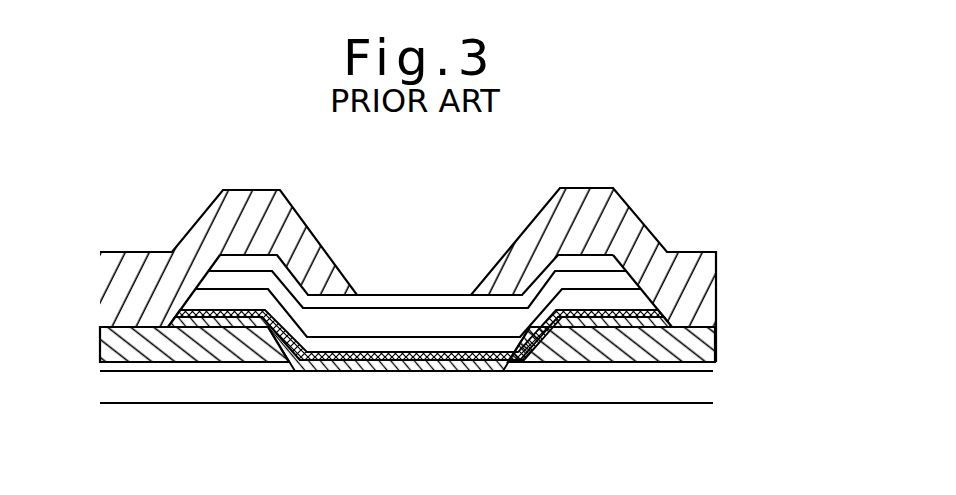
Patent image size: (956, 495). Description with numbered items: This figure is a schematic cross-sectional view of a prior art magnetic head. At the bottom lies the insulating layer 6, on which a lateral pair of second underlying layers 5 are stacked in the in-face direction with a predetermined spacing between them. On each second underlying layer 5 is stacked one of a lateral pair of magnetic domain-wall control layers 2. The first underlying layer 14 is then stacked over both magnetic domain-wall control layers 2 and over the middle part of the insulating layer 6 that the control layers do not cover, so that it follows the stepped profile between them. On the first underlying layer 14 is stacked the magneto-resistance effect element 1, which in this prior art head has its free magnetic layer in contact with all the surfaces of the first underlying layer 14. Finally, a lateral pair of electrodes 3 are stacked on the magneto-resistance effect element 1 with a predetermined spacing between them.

The electrodes 3 is at (622, 214).
The magneto-resistance effect element 1 is at (808, 212).
The first underlying layer 14 is at (668, 315).
The magnetic domain-wall control layers 2 is at (693, 347).
The second underlying layers 5 is at (707, 368).
The insulating layer 6 is at (703, 390).